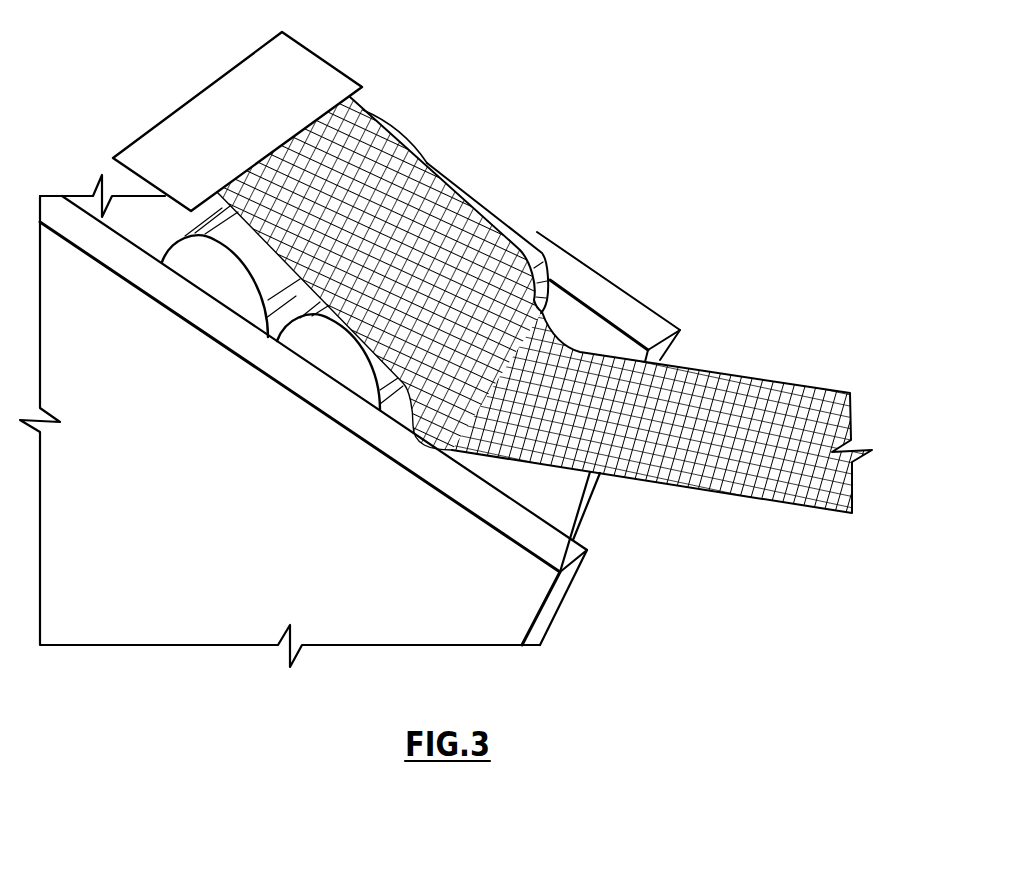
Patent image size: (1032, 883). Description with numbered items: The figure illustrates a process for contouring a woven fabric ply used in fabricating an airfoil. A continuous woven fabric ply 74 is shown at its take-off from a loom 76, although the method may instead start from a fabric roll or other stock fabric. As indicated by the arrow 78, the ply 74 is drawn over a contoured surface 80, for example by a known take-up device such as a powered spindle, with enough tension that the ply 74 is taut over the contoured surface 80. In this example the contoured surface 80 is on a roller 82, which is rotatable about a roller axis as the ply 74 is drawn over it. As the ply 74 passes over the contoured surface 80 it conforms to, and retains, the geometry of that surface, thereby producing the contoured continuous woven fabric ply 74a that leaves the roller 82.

The continuous woven fabric ply 74 is at (563, 310).
The contoured continuous woven fabric ply 74a is at (838, 417).
The loom 76 is at (323, 50).
The arrow 78 is at (436, 302).
The contoured surface 80 is at (520, 250).
The roller 82 is at (548, 275).